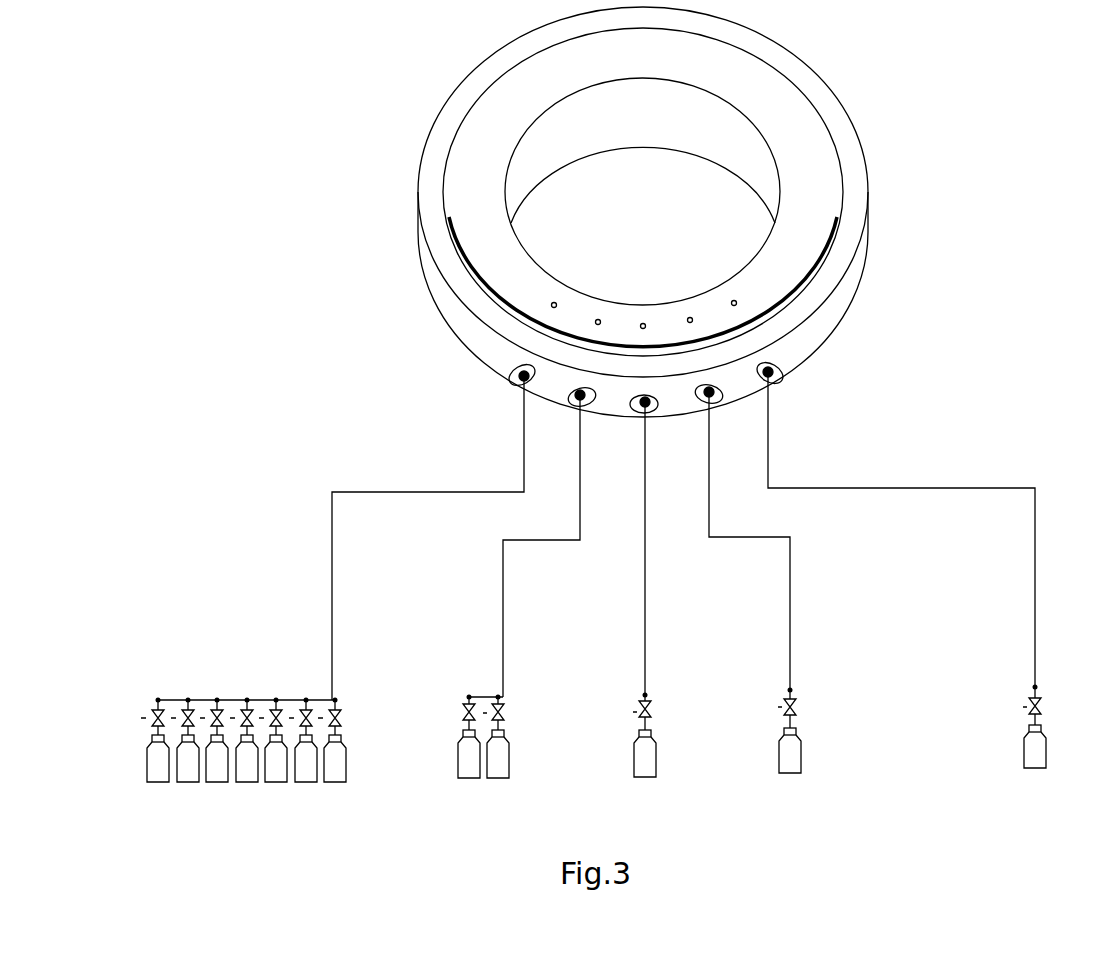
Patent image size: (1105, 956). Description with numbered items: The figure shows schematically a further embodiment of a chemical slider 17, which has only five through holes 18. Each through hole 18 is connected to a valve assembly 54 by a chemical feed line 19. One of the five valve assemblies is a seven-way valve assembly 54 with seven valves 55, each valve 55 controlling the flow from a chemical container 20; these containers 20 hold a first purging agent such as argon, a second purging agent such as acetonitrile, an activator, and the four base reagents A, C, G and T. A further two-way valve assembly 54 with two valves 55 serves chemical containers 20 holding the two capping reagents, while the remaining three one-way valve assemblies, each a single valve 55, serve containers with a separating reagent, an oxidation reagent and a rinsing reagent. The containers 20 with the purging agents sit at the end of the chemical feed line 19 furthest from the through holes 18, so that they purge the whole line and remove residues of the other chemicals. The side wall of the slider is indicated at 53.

The chemical slider 17 is at (817, 97).
The through holes 18 is at (643, 320).
The chemical feed line 19 is at (342, 492).
The chemical container 20 is at (348, 750).
The outer wall of ring 53 is at (843, 295).
The valve assembly 54 is at (465, 712).
The valve 55 is at (500, 713).